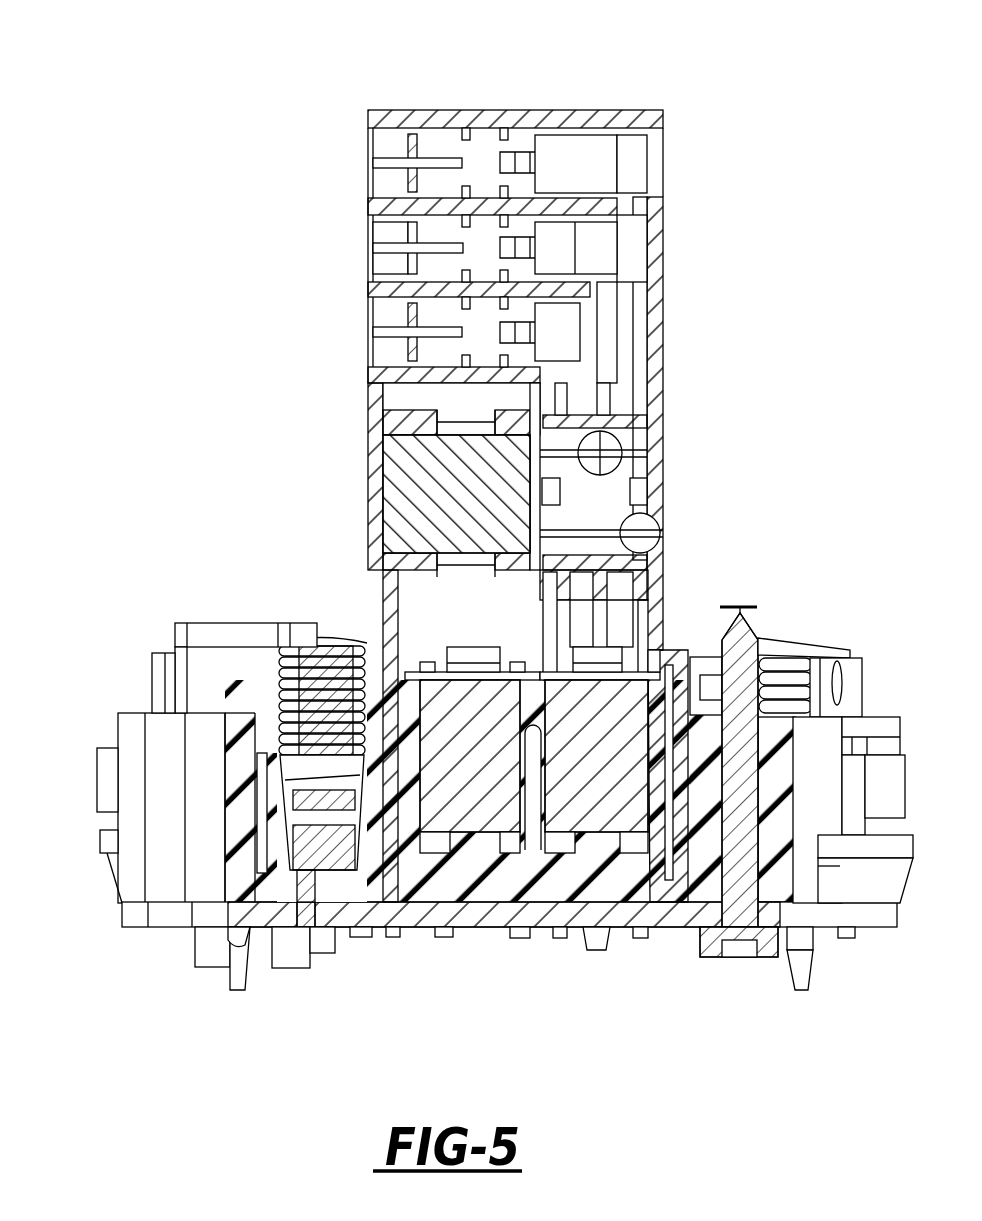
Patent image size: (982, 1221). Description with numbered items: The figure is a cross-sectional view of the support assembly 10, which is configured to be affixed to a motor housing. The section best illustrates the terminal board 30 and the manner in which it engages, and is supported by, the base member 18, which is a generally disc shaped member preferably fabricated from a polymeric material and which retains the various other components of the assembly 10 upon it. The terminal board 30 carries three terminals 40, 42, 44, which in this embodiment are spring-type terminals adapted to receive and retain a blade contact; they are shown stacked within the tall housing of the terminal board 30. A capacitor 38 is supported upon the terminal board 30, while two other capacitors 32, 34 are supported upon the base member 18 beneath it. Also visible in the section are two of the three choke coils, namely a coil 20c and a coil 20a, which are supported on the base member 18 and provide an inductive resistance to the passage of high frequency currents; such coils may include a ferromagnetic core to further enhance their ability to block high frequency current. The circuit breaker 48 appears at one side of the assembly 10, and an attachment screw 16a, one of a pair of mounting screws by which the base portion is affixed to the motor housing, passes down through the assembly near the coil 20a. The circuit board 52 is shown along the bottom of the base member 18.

The support assembly 10 is at (150, 500).
The terminal board 30 is at (585, 110).
The terminal 40 is at (378, 158).
The terminal 42 is at (380, 243).
The terminal 44 is at (378, 345).
The capacitor 38 is at (405, 467).
The choke coil 20c is at (350, 640).
The circuit breaker 48 is at (200, 677).
The base member 18 is at (110, 870).
The circuit board 52 is at (137, 913).
The capacitor 32 is at (487, 812).
The capacitor 34 is at (620, 817).
The mounting screw 16a is at (740, 630).
The choke coil 20a is at (800, 660).